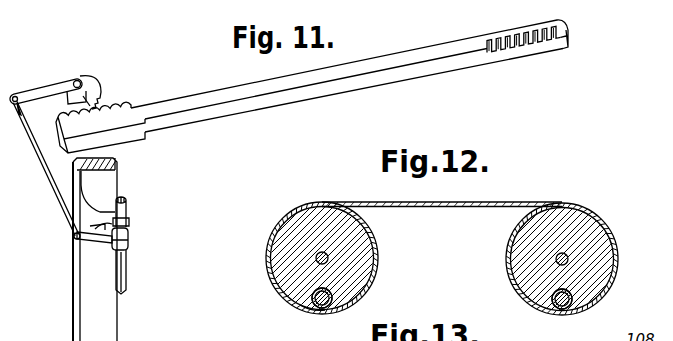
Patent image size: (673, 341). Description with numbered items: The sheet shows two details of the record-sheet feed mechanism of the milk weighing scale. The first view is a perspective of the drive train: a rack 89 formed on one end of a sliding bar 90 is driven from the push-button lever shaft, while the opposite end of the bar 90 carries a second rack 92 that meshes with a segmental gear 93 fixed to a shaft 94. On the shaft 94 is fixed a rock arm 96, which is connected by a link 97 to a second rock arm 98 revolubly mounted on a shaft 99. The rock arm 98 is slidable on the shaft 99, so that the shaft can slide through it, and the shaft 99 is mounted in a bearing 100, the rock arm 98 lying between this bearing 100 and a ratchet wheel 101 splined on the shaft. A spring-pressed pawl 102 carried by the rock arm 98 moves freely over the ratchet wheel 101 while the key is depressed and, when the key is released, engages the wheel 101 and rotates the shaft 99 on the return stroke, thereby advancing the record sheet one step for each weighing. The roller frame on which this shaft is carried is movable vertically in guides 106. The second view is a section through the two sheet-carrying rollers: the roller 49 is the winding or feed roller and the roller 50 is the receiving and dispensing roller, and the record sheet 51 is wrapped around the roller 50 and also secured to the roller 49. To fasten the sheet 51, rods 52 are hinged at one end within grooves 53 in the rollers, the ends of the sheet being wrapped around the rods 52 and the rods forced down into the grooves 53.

In FIG. 11, the rack 89 is at (548, 51).
In FIG. 11, the bar 90 is at (340, 87).
In FIG. 11, the rack 92 is at (128, 105).
In FIG. 11, the segmental gear 93 is at (98, 88).
In FIG. 11, the shaft 94 is at (78, 80).
In FIG. 11, the rock arm 96 is at (40, 91).
In FIG. 11, the link 97 is at (38, 160).
In FIG. 11, the rock arm 98 is at (103, 243).
In FIG. 11, the shaft 99 is at (128, 270).
In FIG. 11, the bearing 100 is at (130, 242).
In FIG. 11, the ratchet wheel 101 is at (130, 222).
In FIG. 11, the spring-pressed pawl 102 is at (74, 233).
In FIG. 11, the guides 106 is at (106, 177).
In FIG. 12, the roller 49 is at (272, 270).
In FIG. 12, the roller 50 is at (594, 275).
In FIG. 12, the sheet 51 is at (451, 207).
In FIG. 12, the rods 52 is at (322, 309).
In FIG. 12, the grooves 53 is at (308, 306).